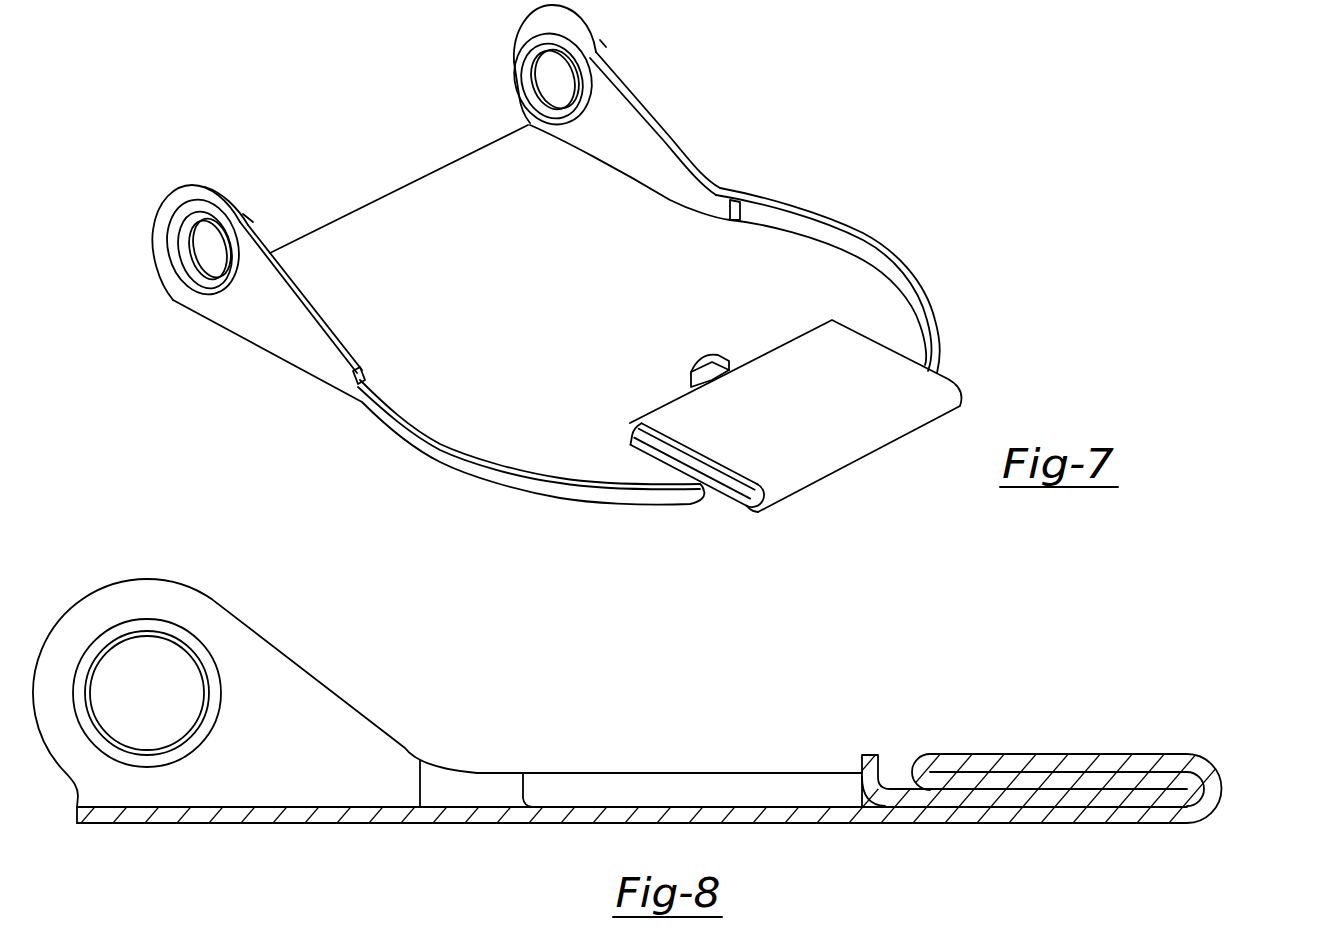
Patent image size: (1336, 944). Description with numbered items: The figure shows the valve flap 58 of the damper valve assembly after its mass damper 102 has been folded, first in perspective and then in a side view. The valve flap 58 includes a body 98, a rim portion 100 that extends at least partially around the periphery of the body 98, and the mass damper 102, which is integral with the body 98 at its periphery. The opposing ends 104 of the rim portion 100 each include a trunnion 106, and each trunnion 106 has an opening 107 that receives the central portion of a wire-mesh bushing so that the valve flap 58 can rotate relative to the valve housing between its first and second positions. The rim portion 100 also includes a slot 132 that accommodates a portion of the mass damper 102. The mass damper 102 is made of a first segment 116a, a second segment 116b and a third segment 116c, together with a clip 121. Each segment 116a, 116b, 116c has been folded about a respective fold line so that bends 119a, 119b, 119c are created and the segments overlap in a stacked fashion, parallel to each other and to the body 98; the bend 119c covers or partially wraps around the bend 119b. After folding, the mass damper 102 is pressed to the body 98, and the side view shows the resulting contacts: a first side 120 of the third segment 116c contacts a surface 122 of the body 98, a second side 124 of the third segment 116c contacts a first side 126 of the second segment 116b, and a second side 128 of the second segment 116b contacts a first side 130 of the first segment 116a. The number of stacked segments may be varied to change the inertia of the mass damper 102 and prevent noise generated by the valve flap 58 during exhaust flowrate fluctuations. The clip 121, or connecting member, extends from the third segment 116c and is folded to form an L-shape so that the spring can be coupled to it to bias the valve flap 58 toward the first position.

In FIG. 7, the valve flap 58 is at (873, 162).
In FIG. 8, the valve flap 58 is at (566, 840).
In FIG. 7, the body 98 is at (747, 256).
In FIG. 8, the body 98 is at (805, 823).
In FIG. 7, the rim portion 100 is at (897, 252).
In FIG. 8, the rim portion 100 is at (790, 784).
In FIG. 7, the mass damper 102 is at (858, 502).
In FIG. 8, the mass damper 102 is at (1107, 715).
In FIG. 7, the opposing ends 104 is at (620, 118).
In FIG. 8, the opposing ends 104 is at (328, 722).
In FIG. 7, the trunnion 106 is at (538, 41).
In FIG. 8, the trunnion 106 is at (137, 628).
In FIG. 7, the opening 107 is at (548, 78).
In FIG. 8, the opening 107 is at (152, 665).
In FIG. 7, the first segment 116a is at (677, 447).
In FIG. 8, the first segment 116a is at (1057, 763).
In FIG. 7, the second segment 116b is at (726, 482).
In FIG. 8, the second segment 116b is at (1120, 782).
In FIG. 7, the third segment 116c is at (653, 463).
In FIG. 8, the third segment 116c is at (1118, 800).
In FIG. 7, the bend 119a is at (655, 441).
In FIG. 8, the bend 119a is at (928, 771).
In FIG. 7, the bend 119b is at (748, 505).
In FIG. 8, the bend 119b is at (1186, 805).
In FIG. 7, the bend 119c is at (762, 512).
In FIG. 8, the bend 119c is at (1213, 773).
In FIG. 8, the first side 120 is at (977, 808).
In FIG. 7, the clip 121 is at (705, 362).
In FIG. 8, the clip 121 is at (876, 758).
In FIG. 8, the surface 122 is at (689, 805).
In FIG. 8, the second side 124 is at (1006, 789).
In FIG. 8, the first side 126 is at (953, 790).
In FIG. 8, the second side 128 is at (1038, 772).
In FIG. 8, the first side 130 is at (1068, 775).
In FIG. 7, the slot 132 is at (487, 435).